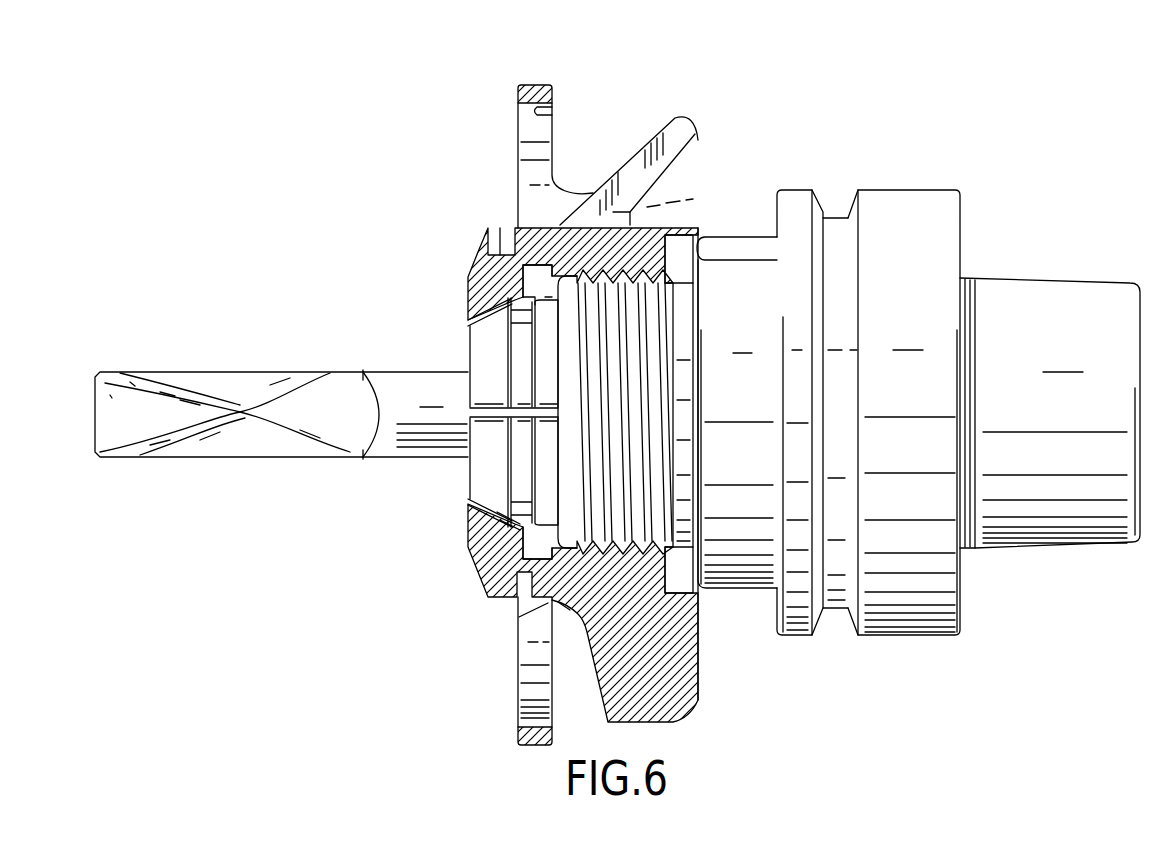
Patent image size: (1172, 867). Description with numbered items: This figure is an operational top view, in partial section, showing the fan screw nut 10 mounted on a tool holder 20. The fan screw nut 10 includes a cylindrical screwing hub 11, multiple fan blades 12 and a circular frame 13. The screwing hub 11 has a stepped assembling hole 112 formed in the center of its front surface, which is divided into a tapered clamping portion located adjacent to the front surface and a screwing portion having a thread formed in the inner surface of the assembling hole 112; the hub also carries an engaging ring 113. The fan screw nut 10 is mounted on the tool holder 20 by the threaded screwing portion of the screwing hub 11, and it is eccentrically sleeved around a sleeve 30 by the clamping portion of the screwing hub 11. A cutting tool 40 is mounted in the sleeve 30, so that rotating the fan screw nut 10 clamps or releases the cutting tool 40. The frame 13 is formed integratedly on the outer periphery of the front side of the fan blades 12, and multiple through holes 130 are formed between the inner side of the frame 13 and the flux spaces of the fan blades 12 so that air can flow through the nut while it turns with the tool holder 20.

The fan screw nut 10 is at (668, 86).
The screwing hub 11 is at (469, 240).
The fan blades 12 is at (690, 158).
The frame 13 is at (548, 92).
The through holes 130 is at (552, 112).
The assembling hole 112 is at (530, 280).
The engaging ring 113 is at (512, 527).
The tool holder 20 is at (1020, 205).
The sleeve 30 is at (478, 357).
The cutting tool 40 is at (394, 380).